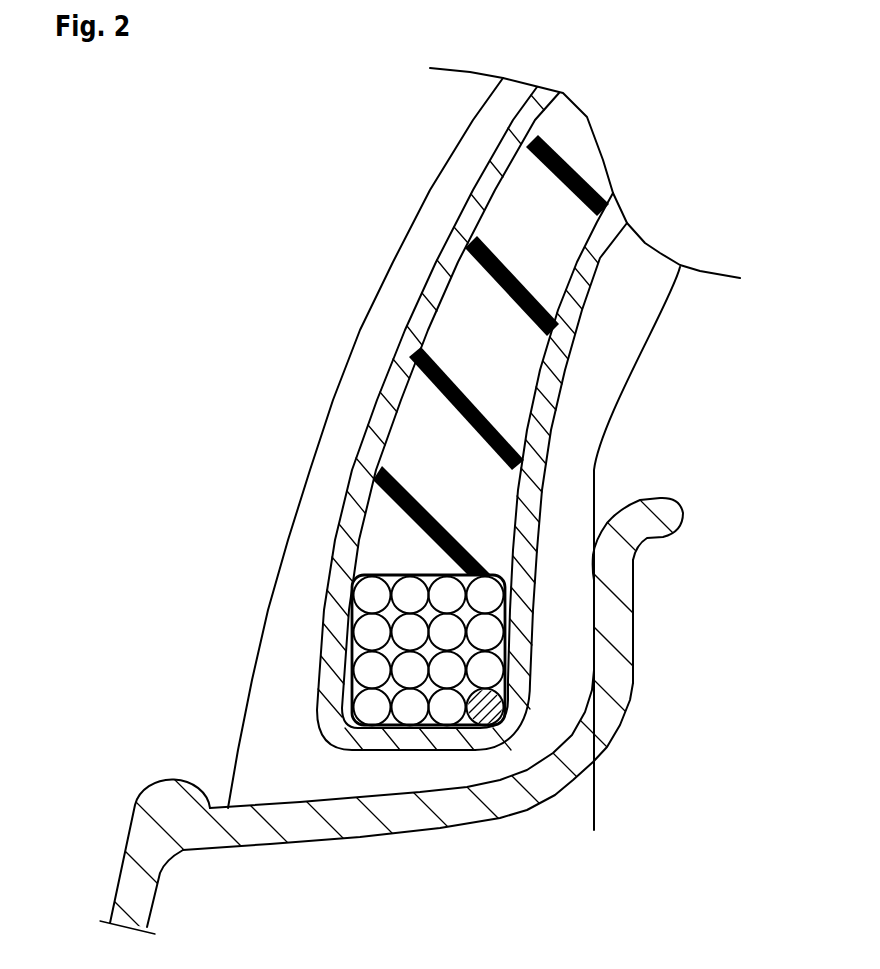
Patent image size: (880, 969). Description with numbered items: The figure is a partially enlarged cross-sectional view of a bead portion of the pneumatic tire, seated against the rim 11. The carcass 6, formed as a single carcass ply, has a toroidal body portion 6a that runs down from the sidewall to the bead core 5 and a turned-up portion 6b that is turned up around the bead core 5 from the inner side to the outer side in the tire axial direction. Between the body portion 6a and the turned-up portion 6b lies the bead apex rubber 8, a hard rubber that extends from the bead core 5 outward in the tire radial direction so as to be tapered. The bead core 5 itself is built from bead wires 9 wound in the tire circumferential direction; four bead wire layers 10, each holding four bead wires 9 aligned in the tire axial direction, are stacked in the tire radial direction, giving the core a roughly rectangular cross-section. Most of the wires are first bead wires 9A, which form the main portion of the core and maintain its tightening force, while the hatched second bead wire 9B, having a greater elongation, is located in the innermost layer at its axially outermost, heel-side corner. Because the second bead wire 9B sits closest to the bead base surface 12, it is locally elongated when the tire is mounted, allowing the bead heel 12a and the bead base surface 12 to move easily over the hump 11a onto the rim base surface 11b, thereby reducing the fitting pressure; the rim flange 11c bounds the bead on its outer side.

The bead core 5 is at (235, 592).
The carcass 6 is at (310, 240).
The body portion 6a is at (597, 257).
The turned-up portion 6b is at (450, 245).
The bead apex rubber 8 is at (433, 463).
The bead wire 9 is at (323, 862).
The first bead wire 9A is at (487, 592).
The second bead wire 9B is at (533, 863).
The bead wire layer 10 is at (518, 681).
The mounting member 11 is at (637, 722).
The hump 11a is at (170, 775).
The rim base surface 11b is at (297, 800).
The hook portion 11c is at (600, 582).
The bead base surface 12 is at (270, 803).
The bead heel 12a is at (628, 565).